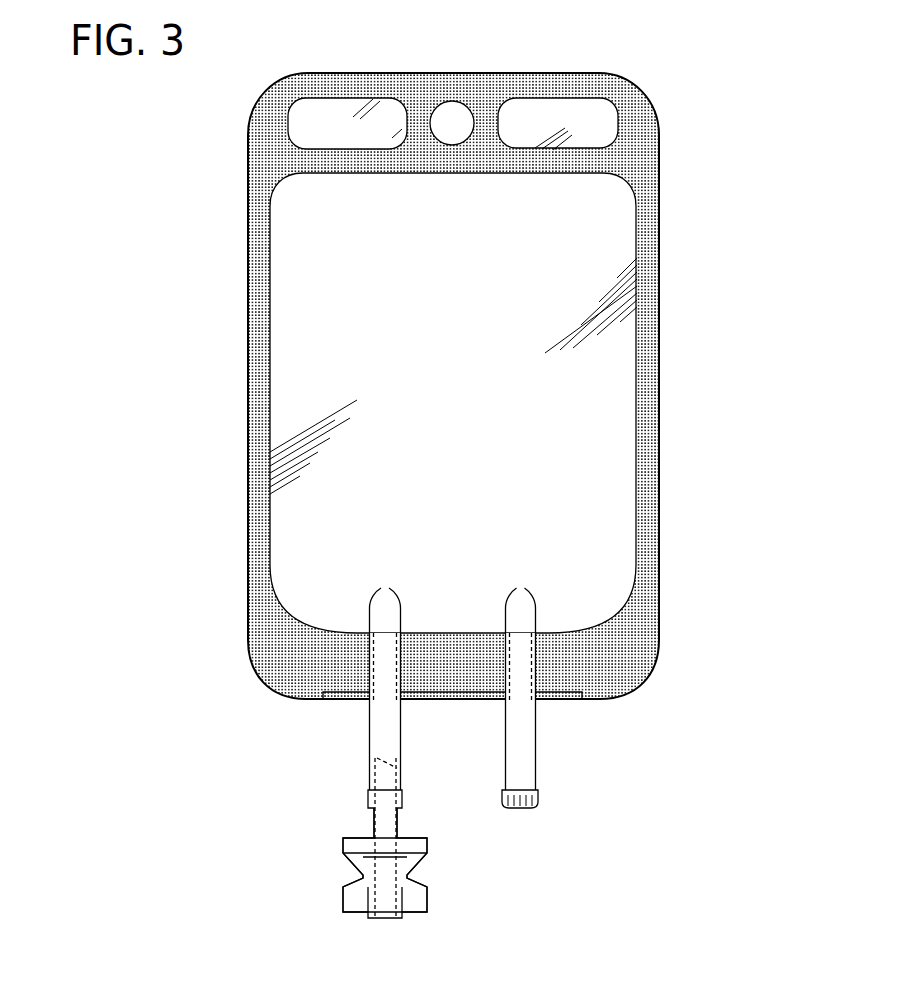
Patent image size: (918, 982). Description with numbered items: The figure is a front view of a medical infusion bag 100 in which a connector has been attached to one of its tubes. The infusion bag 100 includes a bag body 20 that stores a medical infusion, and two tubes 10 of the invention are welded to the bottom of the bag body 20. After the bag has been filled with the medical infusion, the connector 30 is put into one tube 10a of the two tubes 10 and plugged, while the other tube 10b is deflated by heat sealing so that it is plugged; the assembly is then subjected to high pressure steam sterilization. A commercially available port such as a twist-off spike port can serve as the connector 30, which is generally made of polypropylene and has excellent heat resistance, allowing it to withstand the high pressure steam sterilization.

The infusion bag 100 is at (672, 139).
The bag body 20 is at (662, 318).
The tube 10 is at (369, 740).
The one tube 10a is at (353, 753).
The other tube 10b is at (563, 698).
The connector 30 is at (331, 870).